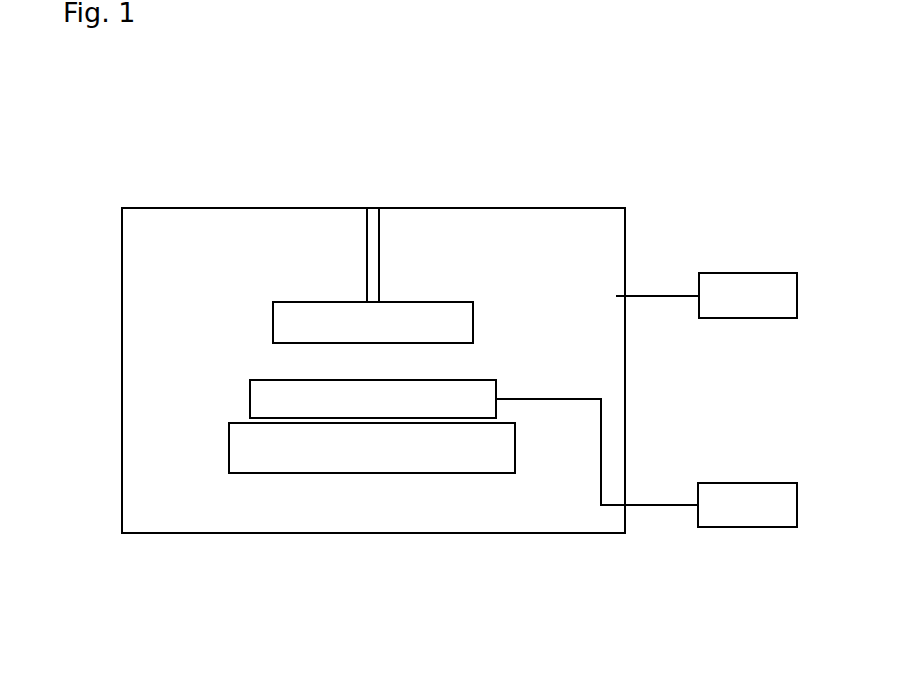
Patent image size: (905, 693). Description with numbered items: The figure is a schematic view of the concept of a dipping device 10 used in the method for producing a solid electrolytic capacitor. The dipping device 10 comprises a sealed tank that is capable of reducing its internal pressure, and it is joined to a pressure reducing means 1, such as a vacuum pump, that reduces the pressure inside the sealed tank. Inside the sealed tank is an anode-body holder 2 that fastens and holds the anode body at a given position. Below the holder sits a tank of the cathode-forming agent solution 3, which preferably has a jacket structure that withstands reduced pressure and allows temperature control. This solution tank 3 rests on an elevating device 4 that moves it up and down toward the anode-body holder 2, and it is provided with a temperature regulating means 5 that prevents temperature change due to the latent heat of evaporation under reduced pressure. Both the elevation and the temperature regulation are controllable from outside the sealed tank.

The dipping device 10 is at (493, 192).
The pressure reducing means 1 is at (748, 297).
The anode-body holder 2 is at (324, 318).
The tank of the cathode-forming agent solution 3 is at (333, 403).
The elevating device 4 is at (278, 454).
The temperature regulating means 5 is at (745, 500).